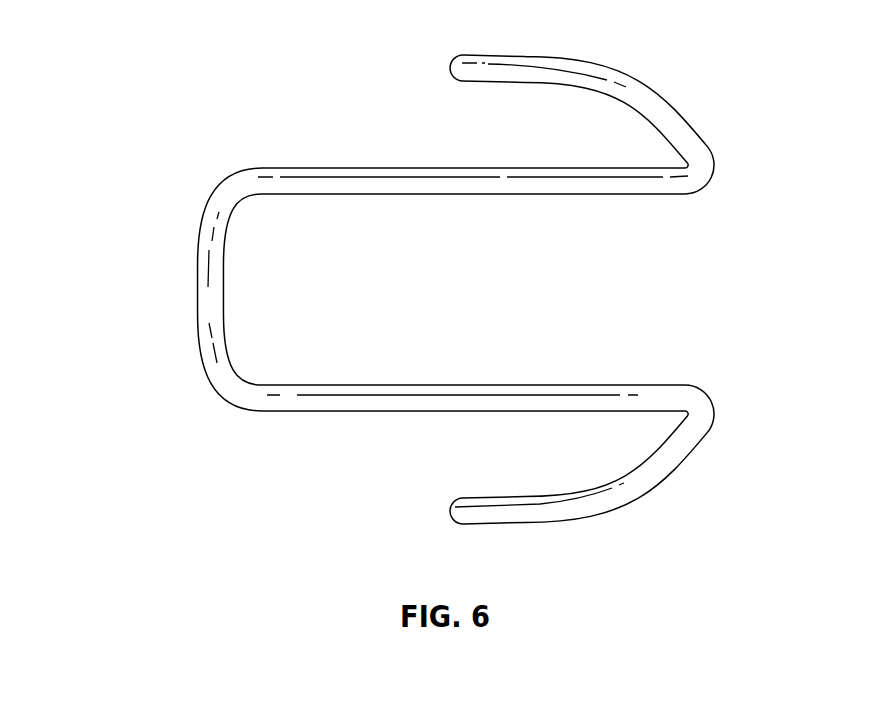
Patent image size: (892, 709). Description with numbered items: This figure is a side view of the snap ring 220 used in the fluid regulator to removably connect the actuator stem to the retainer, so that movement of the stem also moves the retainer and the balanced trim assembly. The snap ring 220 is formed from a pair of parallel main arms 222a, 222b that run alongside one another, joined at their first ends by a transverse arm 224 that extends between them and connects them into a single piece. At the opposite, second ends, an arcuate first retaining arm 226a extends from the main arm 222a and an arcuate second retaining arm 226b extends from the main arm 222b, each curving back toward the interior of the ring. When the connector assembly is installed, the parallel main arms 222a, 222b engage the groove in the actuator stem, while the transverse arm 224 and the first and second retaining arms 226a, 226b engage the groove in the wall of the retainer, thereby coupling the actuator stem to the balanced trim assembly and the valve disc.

The snap ring 220 is at (185, 141).
The main arm 222a is at (315, 185).
The main arm 222b is at (315, 403).
The transverse arm 224 is at (208, 302).
The first retaining arm 226a is at (608, 85).
The second retaining arm 226b is at (635, 482).